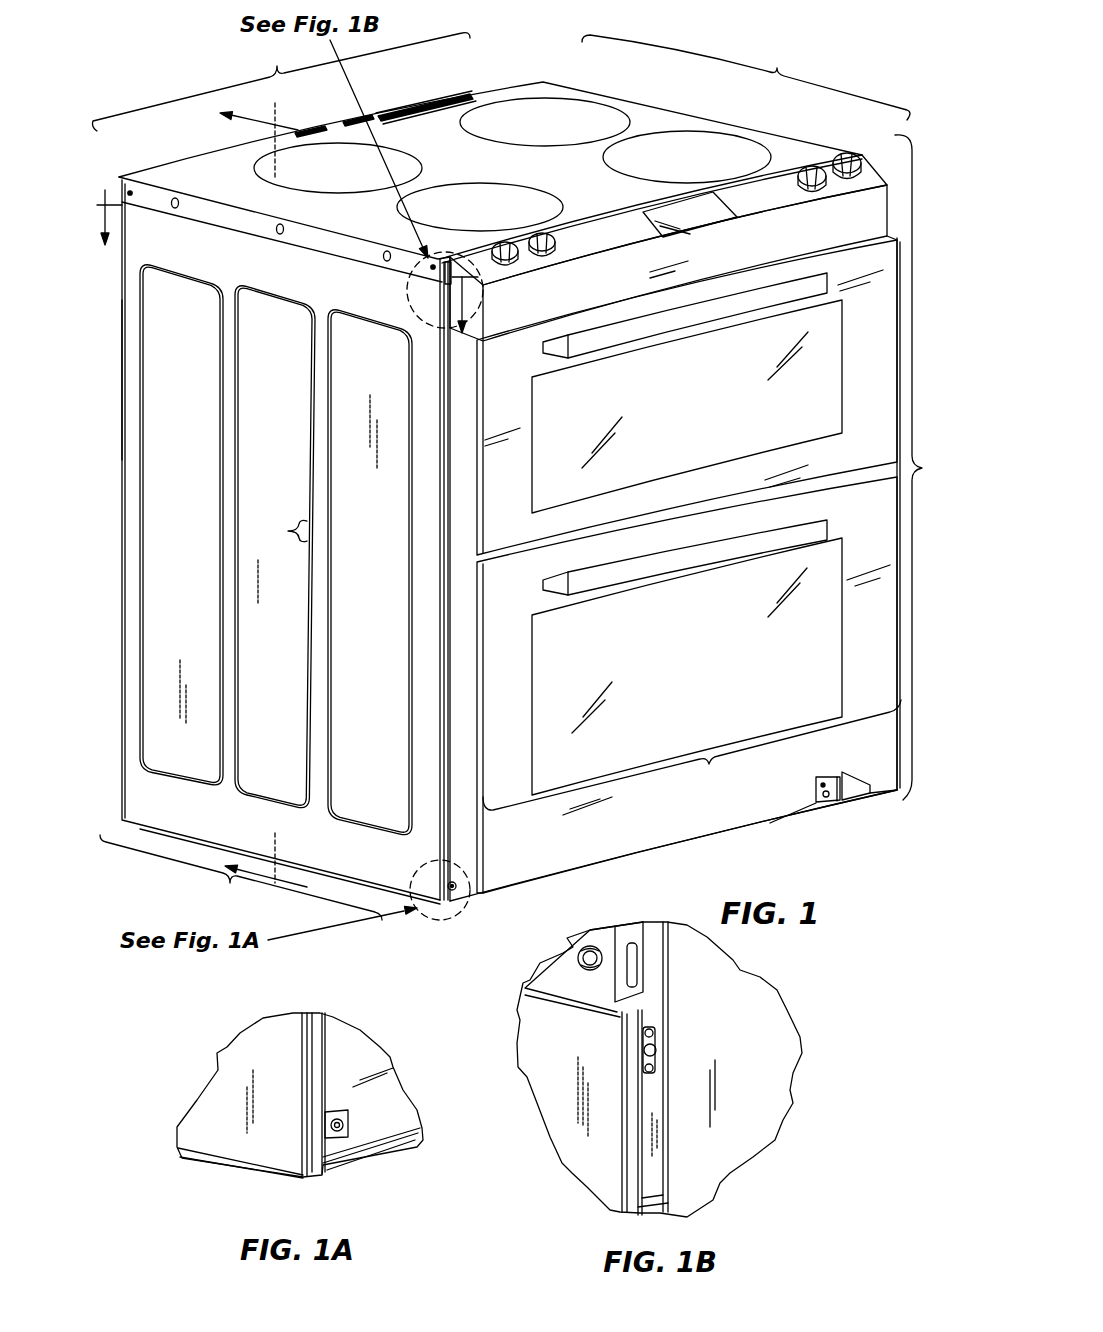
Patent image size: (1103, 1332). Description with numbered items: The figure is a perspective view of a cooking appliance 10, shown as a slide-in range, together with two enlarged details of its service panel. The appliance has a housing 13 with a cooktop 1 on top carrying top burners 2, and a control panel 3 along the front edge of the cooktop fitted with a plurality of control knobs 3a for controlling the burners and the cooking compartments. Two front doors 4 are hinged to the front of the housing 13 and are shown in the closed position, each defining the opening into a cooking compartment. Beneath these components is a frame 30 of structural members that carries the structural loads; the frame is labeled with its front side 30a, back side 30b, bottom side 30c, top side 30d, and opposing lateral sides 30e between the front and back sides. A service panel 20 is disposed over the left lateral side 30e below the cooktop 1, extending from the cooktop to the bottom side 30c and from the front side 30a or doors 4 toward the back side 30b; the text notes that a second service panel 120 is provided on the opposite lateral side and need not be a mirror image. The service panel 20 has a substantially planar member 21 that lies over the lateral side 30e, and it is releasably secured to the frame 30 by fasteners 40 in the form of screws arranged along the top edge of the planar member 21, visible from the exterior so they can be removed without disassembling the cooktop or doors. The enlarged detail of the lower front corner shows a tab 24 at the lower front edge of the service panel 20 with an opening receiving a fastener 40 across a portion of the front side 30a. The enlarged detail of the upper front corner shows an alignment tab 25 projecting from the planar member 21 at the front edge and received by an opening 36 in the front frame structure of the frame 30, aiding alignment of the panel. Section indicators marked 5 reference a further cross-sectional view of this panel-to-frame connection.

In FIG. 1, the cooking appliance 10 is at (886, 47).
In FIG. 1, the cooktop 1 is at (558, 86).
In FIG. 1, the top burners 2 is at (674, 136).
In FIG. 1, the control panel 3 is at (868, 180).
In FIG. 1, the control knobs 3a is at (693, 207).
In FIG. 1, the front door 4 is at (880, 367).
In FIG. 1, the section line 5- 5 is at (287, 281).
In FIG. 1, the housing 13 is at (100, 375).
In FIG. 1, the service panel 20 is at (176, 586).
In FIG. 1A, the service panel 20 is at (215, 1103).
In FIG. 1B, the service panel 20 is at (551, 1112).
In FIG. 1, the planar member 21 is at (290, 632).
In FIG. 1A, the planar member 21 is at (255, 1145).
In FIG. 1B, the planar member 21 is at (593, 1173).
In FIG. 1A, the tab 24 is at (329, 1135).
In FIG. 1B, the tabs 25 is at (652, 1028).
In FIG. 1A, the frame 30 is at (394, 1104).
In FIG. 1, the front side 30a is at (692, 755).
In FIG. 1, the back side 30b is at (282, 82).
In FIG. 1, the bottom side 30c is at (241, 877).
In FIG. 1, the top side 30d is at (746, 77).
In FIG. 1, the lateral sides 30e is at (606, 467).
In FIG. 1B, the opening 36 is at (657, 1070).
In FIG. 1, the fasteners 40 is at (278, 233).
In FIG. 1A, the fasteners 40 is at (341, 1127).
In FIG. 1, the service panel 120 is at (864, 797).